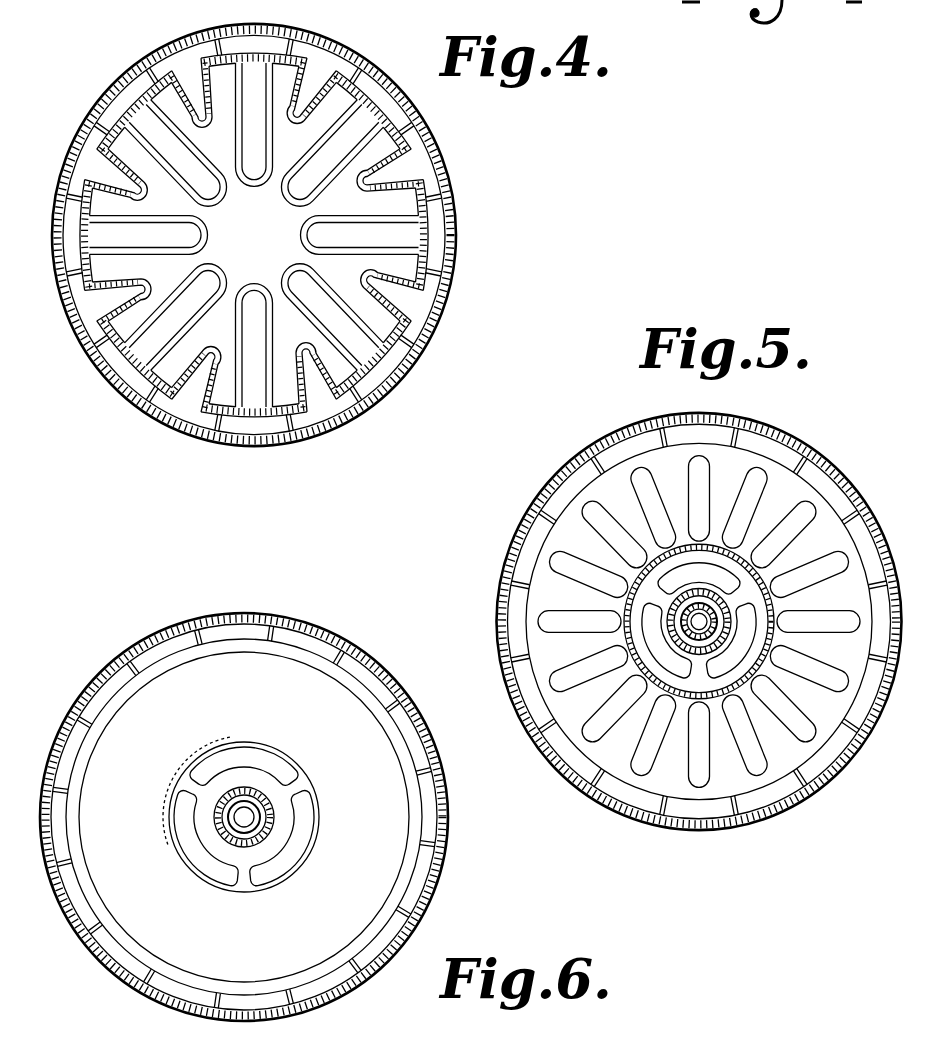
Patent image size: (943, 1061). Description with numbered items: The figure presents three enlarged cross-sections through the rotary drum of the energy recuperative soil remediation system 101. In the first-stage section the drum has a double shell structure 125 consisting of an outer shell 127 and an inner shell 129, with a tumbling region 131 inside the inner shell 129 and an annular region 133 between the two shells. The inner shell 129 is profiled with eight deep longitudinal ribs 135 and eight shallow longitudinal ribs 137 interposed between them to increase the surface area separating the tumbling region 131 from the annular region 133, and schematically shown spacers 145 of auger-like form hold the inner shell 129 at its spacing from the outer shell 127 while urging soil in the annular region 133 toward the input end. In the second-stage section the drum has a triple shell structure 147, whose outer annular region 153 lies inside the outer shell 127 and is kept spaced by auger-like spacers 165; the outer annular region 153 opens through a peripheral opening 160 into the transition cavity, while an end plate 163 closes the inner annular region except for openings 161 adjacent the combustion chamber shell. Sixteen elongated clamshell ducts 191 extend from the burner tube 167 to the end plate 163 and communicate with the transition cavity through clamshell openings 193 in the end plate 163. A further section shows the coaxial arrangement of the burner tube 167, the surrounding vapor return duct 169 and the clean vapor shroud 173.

In FIG. 4, the energy recuperative soil remediation system 101 is at (462, 320).
In FIG. 5, the energy recuperative soil remediation system 101 is at (499, 529).
In FIG. 6, the energy recuperative soil remediation system 101 is at (257, 595).
In FIG. 4, the double shell structure 125 is at (339, 36).
In FIG. 4, the outer shell 127 is at (452, 200).
In FIG. 5, the outer shell 127 is at (786, 432).
In FIG. 6, the outer shell 127 is at (378, 680).
In FIG. 4, the inner shell 129 is at (446, 251).
In FIG. 4, the tumbling region 131 is at (206, 257).
In FIG. 4, the annular region 133 is at (181, 412).
In FIG. 4, the deep longitudinal ribs 135 is at (291, 200).
In FIG. 4, the shallow longitudinal ribs 137 is at (200, 95).
In FIG. 4, the spacers 145 is at (152, 84).
In FIG. 5, the triple shell structure 147 is at (590, 426).
In FIG. 5, the outer annular region 153 is at (695, 428).
In FIG. 6, the outer annular region 153 is at (160, 650).
In FIG. 5, the peripheral opening 160 is at (580, 488).
In FIG. 6, the peripheral opening 160 is at (408, 882).
In FIG. 5, the openings 161 is at (740, 570).
In FIG. 6, the openings 161 is at (253, 803).
In FIG. 5, the end plate 163 is at (668, 785).
In FIG. 6, the end plate 163 is at (302, 656).
In FIG. 5, the spacers 165 is at (808, 792).
In FIG. 6, the spacers 165 is at (244, 817).
In FIG. 6, the burner tube 167 is at (210, 800).
In FIG. 6, the vapor return duct 169 is at (281, 804).
In FIG. 6, the clean vapor shroud 173 is at (337, 914).
In FIG. 5, the clamshell ducts 191 is at (642, 758).
In FIG. 5, the clamshell openings 193 is at (838, 568).